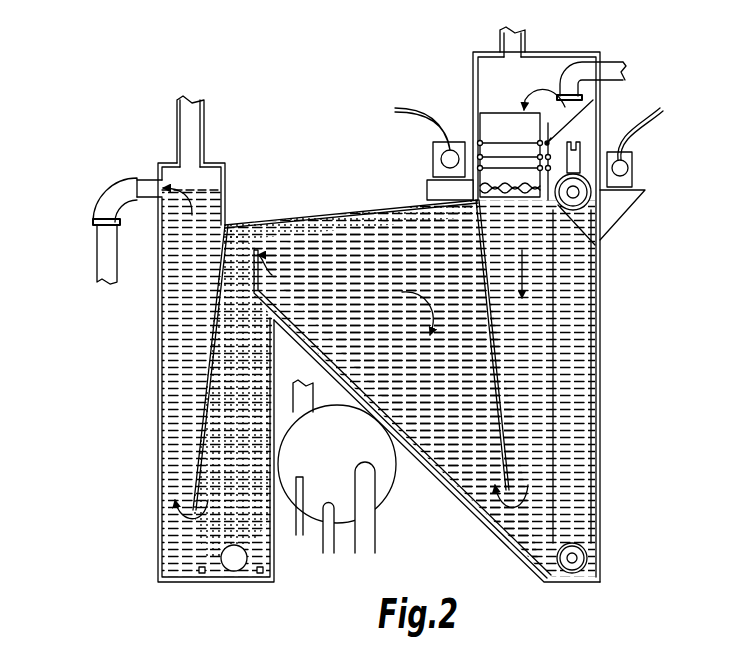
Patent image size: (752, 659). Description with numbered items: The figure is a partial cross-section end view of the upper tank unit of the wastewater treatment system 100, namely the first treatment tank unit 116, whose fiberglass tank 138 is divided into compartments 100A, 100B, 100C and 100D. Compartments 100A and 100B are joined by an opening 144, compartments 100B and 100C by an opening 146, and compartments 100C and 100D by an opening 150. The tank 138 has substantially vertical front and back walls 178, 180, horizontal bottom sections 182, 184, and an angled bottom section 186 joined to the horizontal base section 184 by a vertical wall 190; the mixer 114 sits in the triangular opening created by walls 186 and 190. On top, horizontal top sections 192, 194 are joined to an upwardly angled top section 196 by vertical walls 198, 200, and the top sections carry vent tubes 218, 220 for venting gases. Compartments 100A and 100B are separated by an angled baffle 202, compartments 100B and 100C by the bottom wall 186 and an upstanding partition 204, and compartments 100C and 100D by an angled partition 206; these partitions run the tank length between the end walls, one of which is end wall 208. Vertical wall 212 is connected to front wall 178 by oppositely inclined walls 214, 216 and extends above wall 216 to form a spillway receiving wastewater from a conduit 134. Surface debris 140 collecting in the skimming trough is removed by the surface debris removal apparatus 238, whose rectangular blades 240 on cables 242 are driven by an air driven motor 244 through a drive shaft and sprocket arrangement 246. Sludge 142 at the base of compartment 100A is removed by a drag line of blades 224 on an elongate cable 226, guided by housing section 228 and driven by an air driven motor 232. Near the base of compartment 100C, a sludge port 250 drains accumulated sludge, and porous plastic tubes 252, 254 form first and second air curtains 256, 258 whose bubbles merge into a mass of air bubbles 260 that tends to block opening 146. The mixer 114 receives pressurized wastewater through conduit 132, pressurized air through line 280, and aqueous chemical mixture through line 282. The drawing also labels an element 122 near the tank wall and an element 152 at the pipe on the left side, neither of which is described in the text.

The wastewater treatment system 100 is at (280, 654).
The compartment 100A is at (524, 309).
The compartment 100B is at (410, 388).
The compartment 100C is at (335, 380).
The compartment 100D is at (217, 383).
The mixer 114 is at (390, 495).
The first treatment tank unit 116 is at (148, 325).
The clean coolant tank 122 is at (584, 423).
The conduit 132 is at (374, 552).
The conduit 134 is at (288, 412).
The fiberglass tank 138 is at (602, 357).
The surface debris 140 is at (490, 198).
The sludge 142 is at (540, 555).
The opening 144 is at (508, 525).
The opening 146 is at (265, 222).
The opening 150 is at (170, 540).
The drain elbow pipe 152 is at (97, 266).
The front wall 178 is at (598, 452).
The back wall 180 is at (158, 440).
The horizontal bottom section 182 is at (592, 585).
The horizontal bottom section 184 is at (158, 580).
The angled bottom section 186 is at (480, 520).
The vertical wall 190 is at (267, 387).
The horizontal top section 192 is at (556, 52).
The horizontal top section 194 is at (204, 165).
The upwardly angled top section 196 is at (302, 210).
The vertical wall 198 is at (473, 80).
The vertical wall 200 is at (226, 168).
The angled baffle 202 is at (500, 432).
The upstanding partition 204 is at (262, 270).
The angled partition 206 is at (203, 380).
The end wall 208 is at (425, 415).
The vertical wall 212 is at (552, 200).
The inclined wall 214 is at (582, 243).
The inclined wall 216 is at (596, 100).
The vent tube 218 is at (500, 43).
The vent tube 220 is at (177, 125).
The blades 224 is at (588, 562).
The elongate chain or cable 226 is at (567, 575).
The housing section 228 is at (580, 492).
The air driven motor 232 is at (633, 167).
The surface debris removal apparatus 238 is at (492, 135).
The rectangular blades 240 is at (497, 118).
The cables or chains 242 is at (489, 131).
The air driven motor 244 is at (433, 152).
The drive shaft and sprocket arrangement 246 is at (427, 188).
The sludge port 250 is at (234, 571).
The porous plastic tube 252 is at (260, 572).
The porous plastic tube 254 is at (202, 572).
The first air curtain 256 is at (212, 509).
The second air curtain 258 is at (202, 545).
The mass of air bubbles 260 is at (240, 228).
The line 280 is at (297, 538).
The line 282 is at (330, 553).